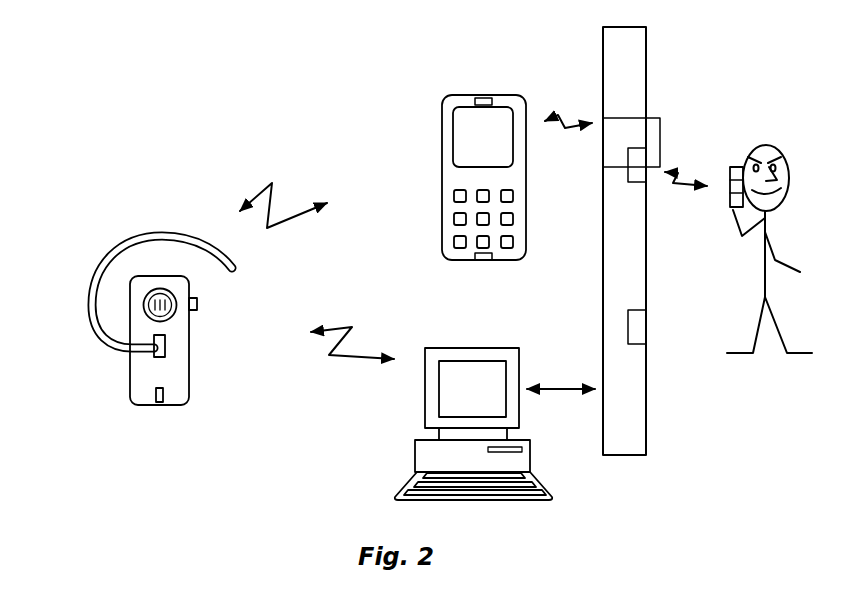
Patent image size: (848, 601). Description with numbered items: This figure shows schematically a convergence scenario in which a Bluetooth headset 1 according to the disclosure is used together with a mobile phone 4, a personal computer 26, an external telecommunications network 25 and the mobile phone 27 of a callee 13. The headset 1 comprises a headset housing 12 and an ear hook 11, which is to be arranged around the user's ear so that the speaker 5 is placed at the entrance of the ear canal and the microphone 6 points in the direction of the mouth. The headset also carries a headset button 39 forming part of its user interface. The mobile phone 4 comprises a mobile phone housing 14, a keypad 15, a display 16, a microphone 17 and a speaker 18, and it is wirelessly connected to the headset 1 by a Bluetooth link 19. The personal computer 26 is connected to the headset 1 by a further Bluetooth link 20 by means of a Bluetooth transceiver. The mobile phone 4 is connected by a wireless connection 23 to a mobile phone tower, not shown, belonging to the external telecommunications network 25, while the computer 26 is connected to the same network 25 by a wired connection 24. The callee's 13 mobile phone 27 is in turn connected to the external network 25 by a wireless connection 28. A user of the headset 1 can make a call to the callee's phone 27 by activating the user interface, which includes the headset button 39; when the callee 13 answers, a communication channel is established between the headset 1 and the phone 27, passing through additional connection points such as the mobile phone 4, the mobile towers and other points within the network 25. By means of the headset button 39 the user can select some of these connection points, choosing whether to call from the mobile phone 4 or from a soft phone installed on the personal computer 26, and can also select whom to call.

The Bluetooth headset 1 is at (154, 340).
The mobile phone 4 is at (520, 180).
The speaker 5 is at (168, 312).
The microphone 6 is at (160, 403).
The ear hook 11 is at (93, 277).
The headset housing 12 is at (177, 376).
The callee 13 is at (763, 98).
The mobile phone housing 14 is at (448, 182).
The keypad 15 is at (457, 217).
The display 16 is at (477, 138).
The microphone 17 is at (483, 263).
The speaker 18 is at (475, 100).
The Bluetooth link 19 is at (283, 197).
The Bluetooth link 20 is at (352, 360).
The wireless connection 23 is at (569, 106).
The wired connection 24 is at (561, 370).
The external telecommunications network 25 is at (618, 417).
The personal computer 26 is at (432, 453).
The callee's mobile phone 27 is at (728, 174).
The wireless connection 28 is at (682, 158).
The headset button 39 is at (197, 305).